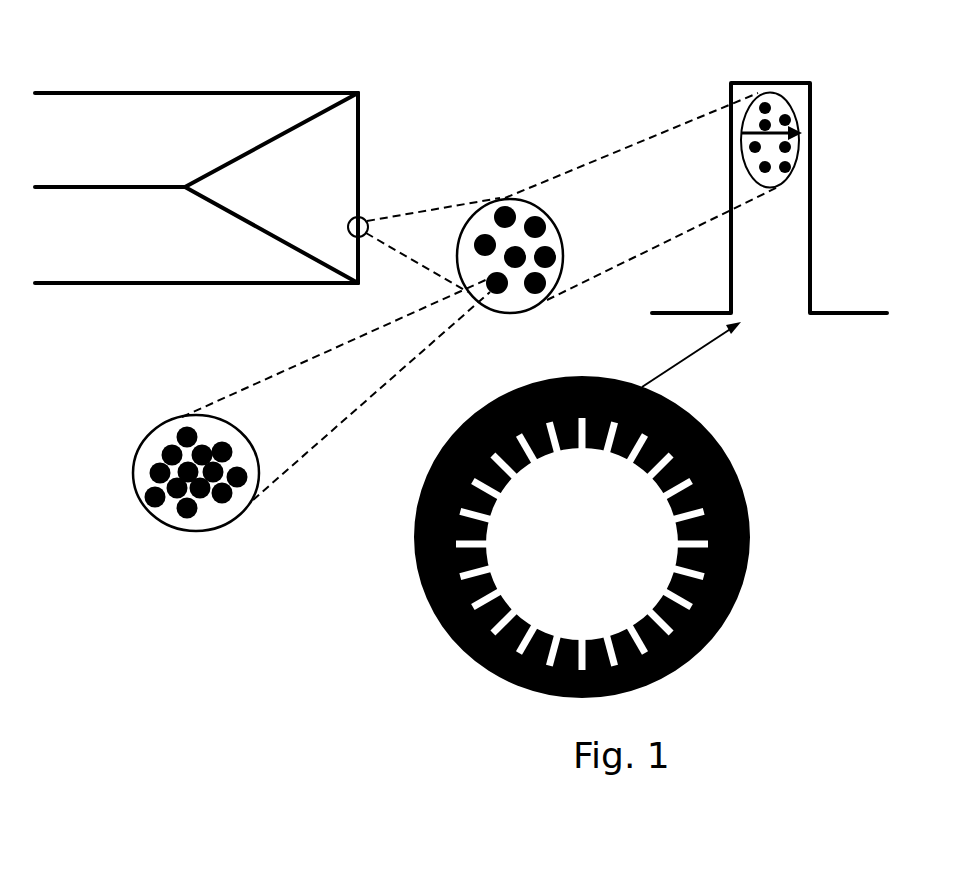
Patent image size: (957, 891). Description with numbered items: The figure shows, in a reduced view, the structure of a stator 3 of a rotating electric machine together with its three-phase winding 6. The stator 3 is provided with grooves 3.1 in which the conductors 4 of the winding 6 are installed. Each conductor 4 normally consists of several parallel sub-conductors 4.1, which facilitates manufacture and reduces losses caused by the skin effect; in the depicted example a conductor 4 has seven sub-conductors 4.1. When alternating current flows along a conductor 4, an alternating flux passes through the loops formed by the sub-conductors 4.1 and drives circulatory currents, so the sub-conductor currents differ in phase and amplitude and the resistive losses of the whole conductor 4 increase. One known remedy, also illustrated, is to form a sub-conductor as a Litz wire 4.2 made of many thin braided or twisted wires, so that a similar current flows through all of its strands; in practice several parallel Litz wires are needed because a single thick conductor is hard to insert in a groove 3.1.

The winding 6 is at (340, 81).
The conductor 4 is at (563, 233).
The sub-conductor 4.1 is at (503, 208).
The Litz wire sub-conductor 4.2 is at (132, 463).
The stator 3 is at (750, 517).
The groove 3.1 is at (811, 222).